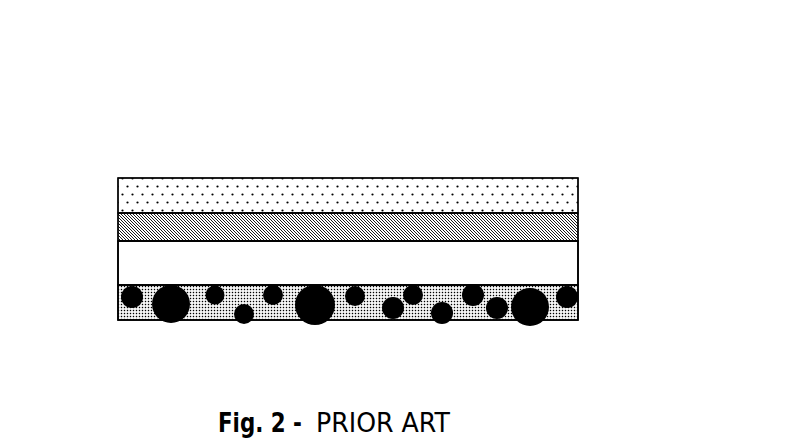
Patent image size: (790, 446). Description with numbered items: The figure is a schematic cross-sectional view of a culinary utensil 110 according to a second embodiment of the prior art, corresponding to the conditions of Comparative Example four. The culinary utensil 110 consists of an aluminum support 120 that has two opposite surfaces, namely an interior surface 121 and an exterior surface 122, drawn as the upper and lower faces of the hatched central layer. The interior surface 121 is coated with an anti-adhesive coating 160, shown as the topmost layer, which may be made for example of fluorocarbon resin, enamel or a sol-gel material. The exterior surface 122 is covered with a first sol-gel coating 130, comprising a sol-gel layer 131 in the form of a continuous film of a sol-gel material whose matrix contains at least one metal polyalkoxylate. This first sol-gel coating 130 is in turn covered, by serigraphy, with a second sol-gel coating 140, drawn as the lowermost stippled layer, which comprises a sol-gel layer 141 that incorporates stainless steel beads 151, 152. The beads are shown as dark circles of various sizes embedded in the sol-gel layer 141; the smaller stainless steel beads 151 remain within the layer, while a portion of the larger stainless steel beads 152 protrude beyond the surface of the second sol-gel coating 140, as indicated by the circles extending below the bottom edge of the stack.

The culinary utensil 110 is at (512, 140).
The anti-adhesive coating 160 is at (578, 178).
The aluminum support 120 is at (642, 241).
The interior surface 121 is at (140, 212).
The exterior surface 122 is at (138, 241).
The first sol-gel coating 130 is at (578, 285).
The sol-gel layer 131 is at (578, 264).
The second sol-gel coating 140 is at (578, 320).
The sol-gel layer 141 is at (577, 312).
The stainless steel beads 151 is at (388, 321).
The stainless steel beads 152 is at (311, 321).